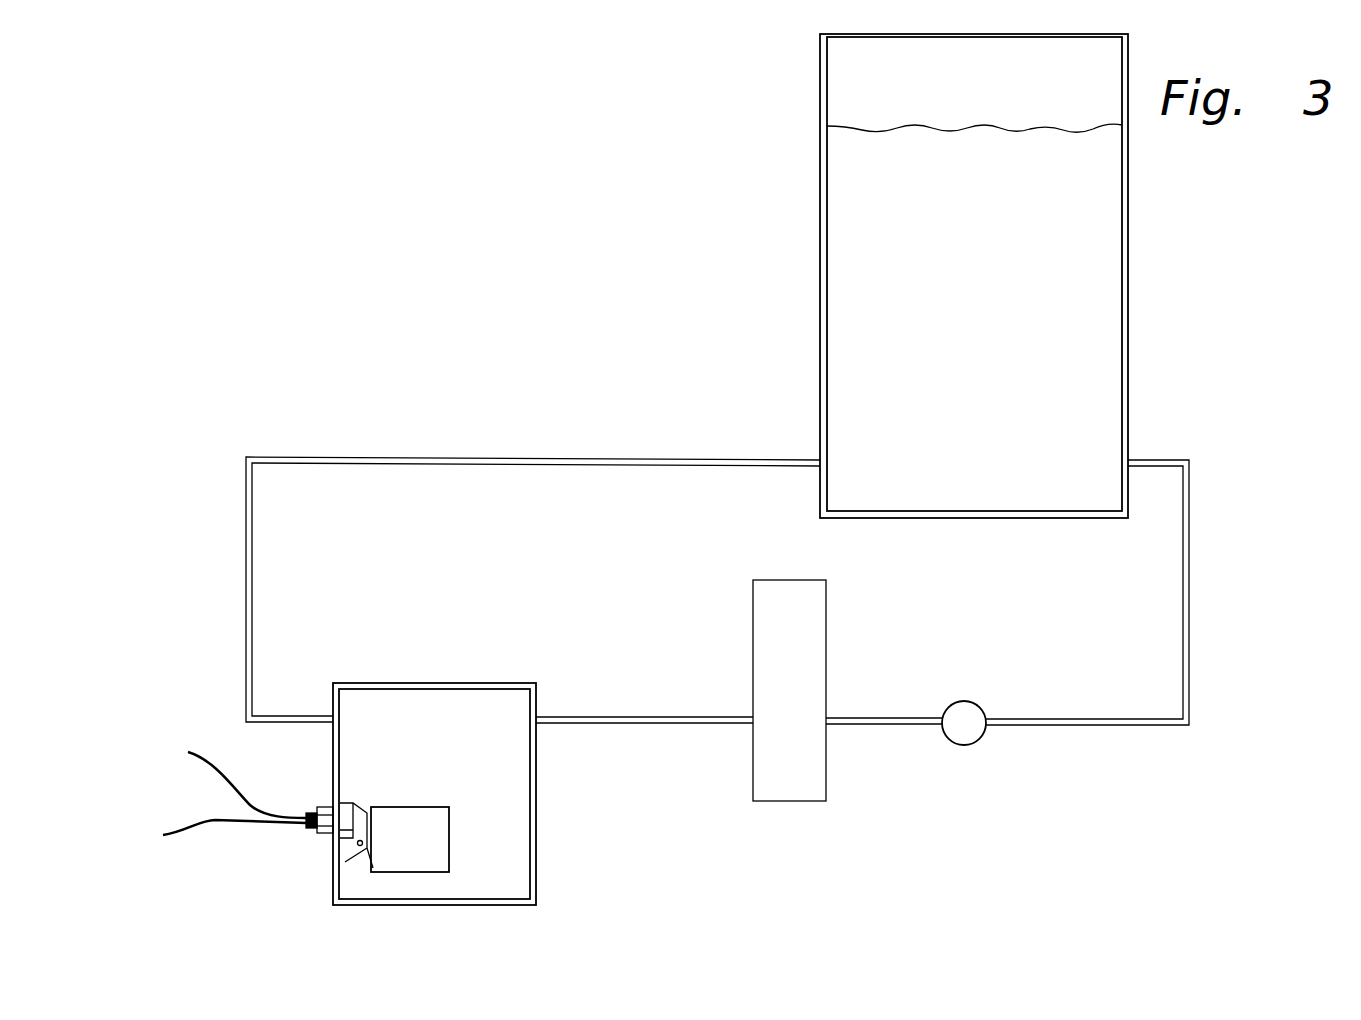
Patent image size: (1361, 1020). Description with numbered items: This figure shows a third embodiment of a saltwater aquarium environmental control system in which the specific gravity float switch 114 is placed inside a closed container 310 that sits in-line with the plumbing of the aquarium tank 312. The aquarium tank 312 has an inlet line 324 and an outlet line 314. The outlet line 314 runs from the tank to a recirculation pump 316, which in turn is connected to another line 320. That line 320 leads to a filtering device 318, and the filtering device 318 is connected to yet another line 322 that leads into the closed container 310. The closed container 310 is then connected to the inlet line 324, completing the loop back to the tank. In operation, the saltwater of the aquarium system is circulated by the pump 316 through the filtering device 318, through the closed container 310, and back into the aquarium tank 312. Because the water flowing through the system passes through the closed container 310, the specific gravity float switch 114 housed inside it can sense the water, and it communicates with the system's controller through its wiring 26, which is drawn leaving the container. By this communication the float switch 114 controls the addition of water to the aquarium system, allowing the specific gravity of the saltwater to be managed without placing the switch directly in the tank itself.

The aquarium tank 312 is at (780, 186).
The inlet line 324 is at (560, 458).
The outlet line 314 is at (1189, 592).
The line 322 is at (643, 717).
The line 320 is at (878, 718).
The filtering device 318 is at (770, 748).
The recirculation pump 316 is at (968, 745).
The closed container 310 is at (555, 861).
The specific gravity float switch 114 is at (433, 857).
The wiring 26 is at (210, 818).